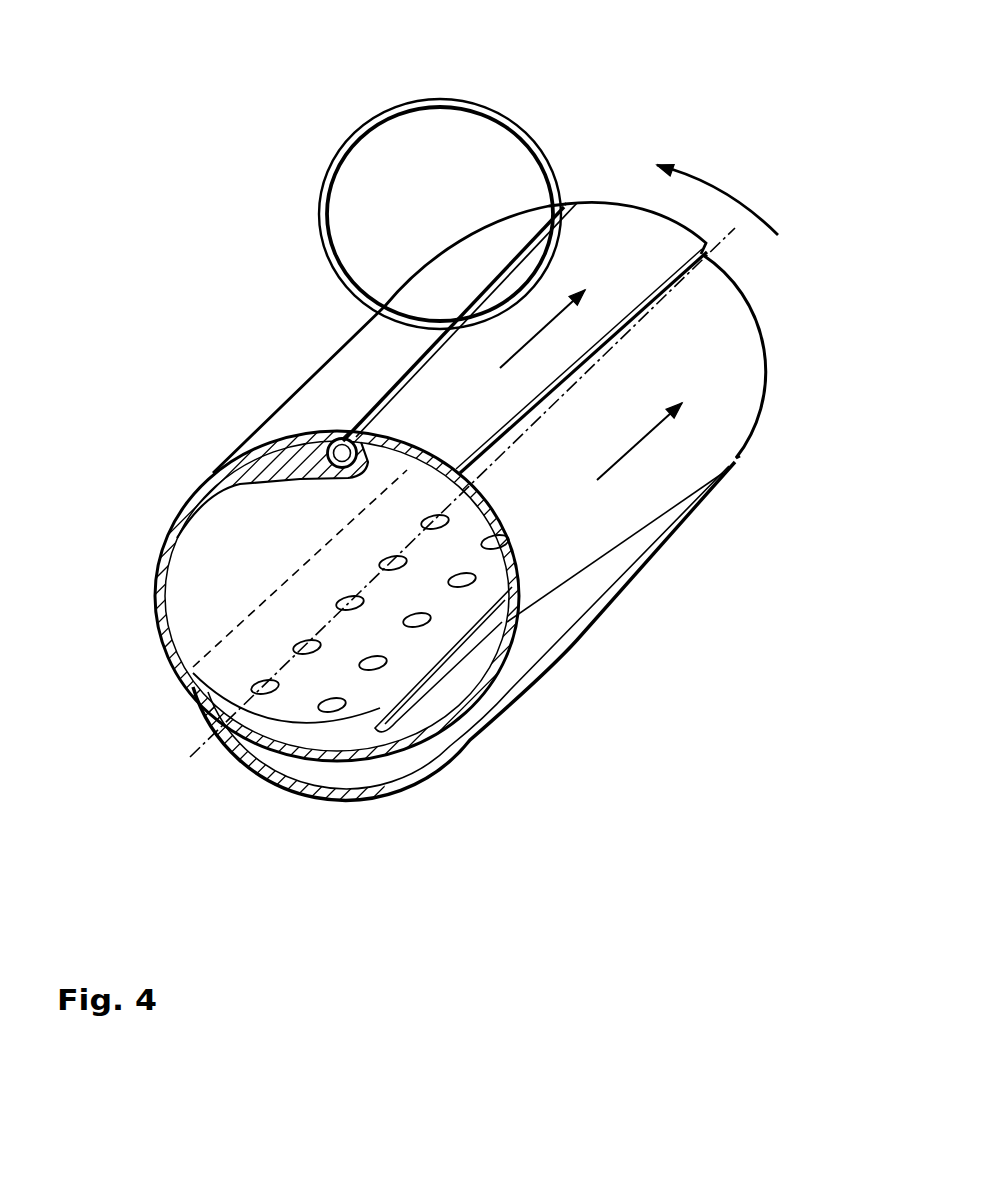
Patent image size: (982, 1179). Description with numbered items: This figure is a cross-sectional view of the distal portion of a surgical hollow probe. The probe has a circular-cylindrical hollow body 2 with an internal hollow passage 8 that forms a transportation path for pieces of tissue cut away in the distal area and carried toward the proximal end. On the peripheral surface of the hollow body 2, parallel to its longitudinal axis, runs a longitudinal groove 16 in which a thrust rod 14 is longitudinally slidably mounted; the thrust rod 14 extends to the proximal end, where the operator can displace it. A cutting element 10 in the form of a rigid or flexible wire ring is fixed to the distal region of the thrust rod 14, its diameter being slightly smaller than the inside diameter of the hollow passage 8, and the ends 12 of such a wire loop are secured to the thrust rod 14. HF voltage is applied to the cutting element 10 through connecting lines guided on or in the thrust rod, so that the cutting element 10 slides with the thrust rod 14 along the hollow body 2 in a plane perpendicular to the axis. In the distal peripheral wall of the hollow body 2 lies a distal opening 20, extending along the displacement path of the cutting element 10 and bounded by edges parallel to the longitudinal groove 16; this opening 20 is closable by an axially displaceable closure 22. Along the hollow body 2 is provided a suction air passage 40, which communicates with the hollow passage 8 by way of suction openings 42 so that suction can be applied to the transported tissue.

The hollow body 2 is at (325, 397).
The hollow passage 8 is at (228, 562).
The cutting element 10 is at (443, 102).
The ends of wire loop 12 is at (440, 333).
The thrust rod 14 is at (223, 464).
The longitudinal groove 16 is at (192, 496).
The distal opening 20 is at (572, 553).
The closure 22 is at (723, 388).
The suction air passage 40 is at (313, 768).
The suction openings 42 is at (250, 741).